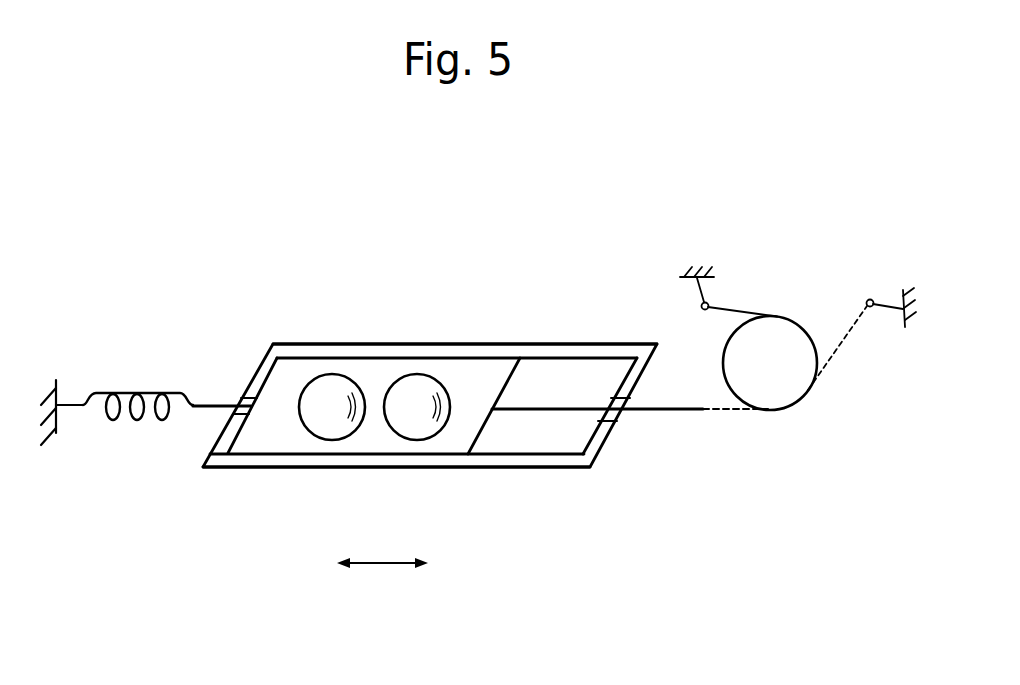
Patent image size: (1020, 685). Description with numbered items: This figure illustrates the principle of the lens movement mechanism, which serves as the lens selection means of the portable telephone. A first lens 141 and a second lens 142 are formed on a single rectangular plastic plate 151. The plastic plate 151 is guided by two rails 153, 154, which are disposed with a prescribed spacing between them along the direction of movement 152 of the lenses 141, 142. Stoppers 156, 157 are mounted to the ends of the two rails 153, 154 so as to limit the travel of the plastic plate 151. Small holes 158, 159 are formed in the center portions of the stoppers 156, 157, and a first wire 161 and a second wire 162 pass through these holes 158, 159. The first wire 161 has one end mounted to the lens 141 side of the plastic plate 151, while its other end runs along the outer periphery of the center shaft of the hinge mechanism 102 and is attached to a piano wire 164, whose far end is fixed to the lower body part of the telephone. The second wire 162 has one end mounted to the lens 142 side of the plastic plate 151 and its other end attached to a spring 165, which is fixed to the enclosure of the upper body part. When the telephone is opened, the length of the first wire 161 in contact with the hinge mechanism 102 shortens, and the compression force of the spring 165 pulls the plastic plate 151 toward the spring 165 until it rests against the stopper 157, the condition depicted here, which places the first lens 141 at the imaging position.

The hinge mechanism 102 is at (775, 393).
The first lens 141 is at (418, 375).
The second lens 142 is at (340, 375).
The plastic plate 151 is at (372, 443).
The direction of movement 152 is at (380, 567).
The rail 153 is at (553, 350).
The rail 154 is at (520, 463).
The stopper 156 is at (612, 427).
The stopper 157 is at (226, 442).
The small hole 158 is at (606, 404).
The small hole 159 is at (244, 400).
The first wire 161 is at (665, 405).
The second wire 162 is at (210, 405).
The piano wire 164 is at (695, 291).
The spring 165 is at (127, 391).